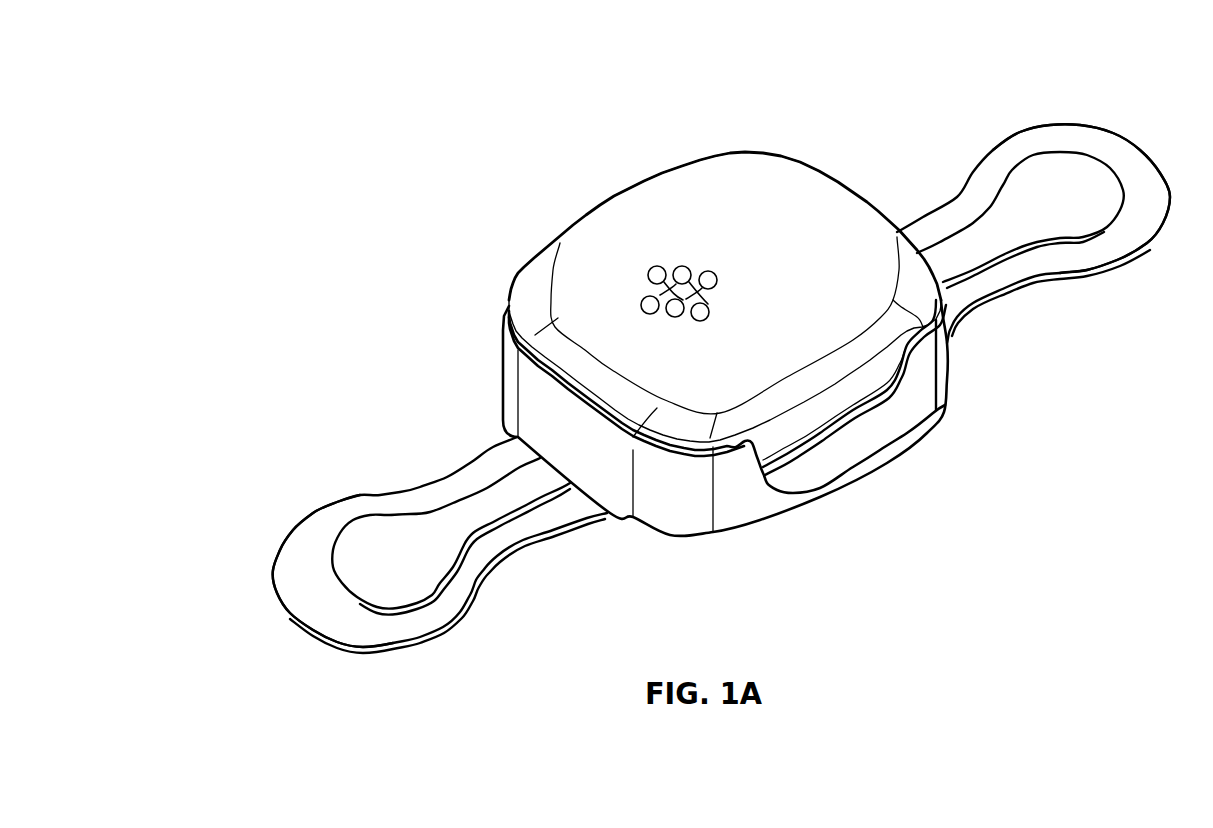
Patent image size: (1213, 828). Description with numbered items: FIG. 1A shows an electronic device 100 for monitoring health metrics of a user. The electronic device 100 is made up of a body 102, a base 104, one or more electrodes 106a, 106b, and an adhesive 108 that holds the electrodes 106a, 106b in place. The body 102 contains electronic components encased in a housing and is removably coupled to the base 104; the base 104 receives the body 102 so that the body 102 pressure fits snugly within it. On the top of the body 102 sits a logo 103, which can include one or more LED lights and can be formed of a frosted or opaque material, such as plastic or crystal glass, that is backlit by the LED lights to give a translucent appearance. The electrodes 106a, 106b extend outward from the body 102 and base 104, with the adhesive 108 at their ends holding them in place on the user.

The electronic device 100 is at (280, 140).
The body 102 is at (850, 190).
The logo 103 is at (660, 250).
The base 104 is at (937, 412).
The electrode 106a is at (1037, 158).
The electrode 106b is at (393, 514).
The adhesive 108 is at (1112, 131).